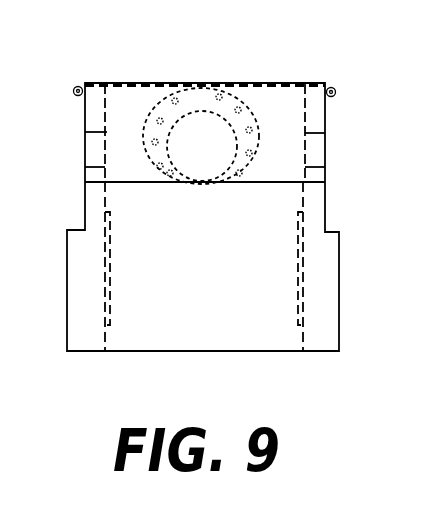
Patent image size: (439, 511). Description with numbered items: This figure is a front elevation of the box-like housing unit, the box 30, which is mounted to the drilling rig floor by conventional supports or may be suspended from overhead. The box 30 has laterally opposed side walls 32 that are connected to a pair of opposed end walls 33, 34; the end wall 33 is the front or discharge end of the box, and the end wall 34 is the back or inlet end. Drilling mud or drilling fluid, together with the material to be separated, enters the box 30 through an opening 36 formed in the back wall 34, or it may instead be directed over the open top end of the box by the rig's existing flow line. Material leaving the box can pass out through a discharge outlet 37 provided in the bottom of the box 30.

The housing body 30 is at (341, 283).
The shoulder / side wall 32 is at (105, 228).
The lower housing section 33 is at (272, 320).
The top wall 34 is at (294, 96).
The circular opening / speaker aperture 36 is at (203, 120).
The bottom wall 37 is at (210, 352).